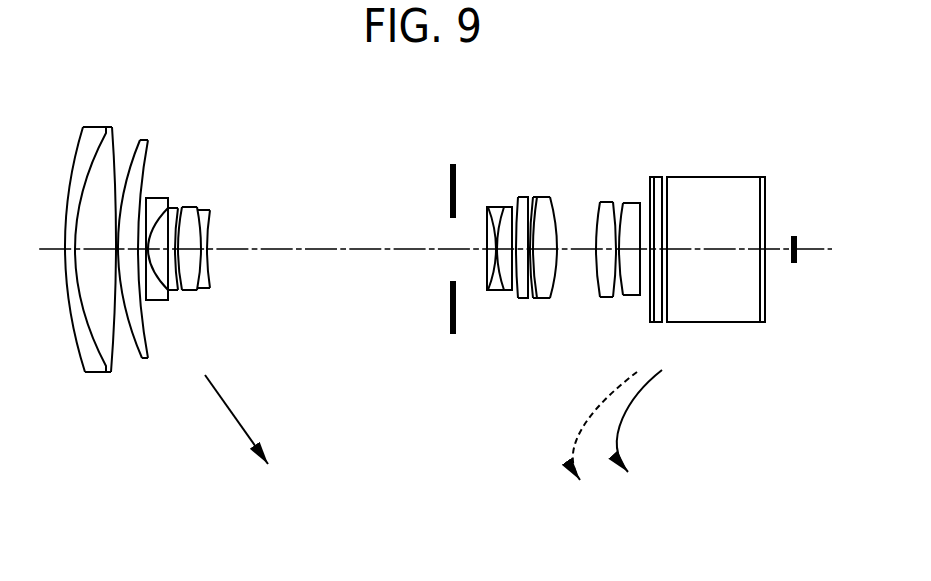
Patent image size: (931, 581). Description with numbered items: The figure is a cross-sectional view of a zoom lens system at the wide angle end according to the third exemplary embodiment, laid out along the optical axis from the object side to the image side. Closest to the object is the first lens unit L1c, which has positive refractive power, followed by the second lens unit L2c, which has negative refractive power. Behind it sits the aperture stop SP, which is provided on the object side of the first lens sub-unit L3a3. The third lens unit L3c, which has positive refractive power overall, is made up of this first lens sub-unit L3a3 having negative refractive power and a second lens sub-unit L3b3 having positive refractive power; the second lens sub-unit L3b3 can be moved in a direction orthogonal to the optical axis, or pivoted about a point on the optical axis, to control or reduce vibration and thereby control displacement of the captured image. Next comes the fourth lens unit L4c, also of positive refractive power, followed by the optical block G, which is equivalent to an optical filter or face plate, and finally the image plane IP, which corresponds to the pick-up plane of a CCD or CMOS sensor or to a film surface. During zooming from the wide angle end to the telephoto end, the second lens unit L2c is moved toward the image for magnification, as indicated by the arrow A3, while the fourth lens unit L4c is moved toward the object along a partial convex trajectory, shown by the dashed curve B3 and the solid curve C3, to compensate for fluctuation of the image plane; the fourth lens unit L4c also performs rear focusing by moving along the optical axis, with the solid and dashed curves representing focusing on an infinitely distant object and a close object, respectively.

The first lens unit L1c is at (177, 396).
The second lens unit L2c is at (210, 307).
The third lens unit L3c is at (521, 270).
The first lens sub-unit L3a3 is at (520, 192).
The second lens sub-unit L3b3 is at (562, 192).
The fourth lens unit L4c is at (643, 322).
The aperture stop SP is at (452, 167).
The optical block G is at (782, 160).
The image plane IP is at (794, 237).
The movement of the second lens unit A3 is at (236, 419).
The movement trajectory of the fourth lens unit B3 is at (590, 426).
The movement locus of fourth lens unit during zooming (solid) C3 is at (640, 421).